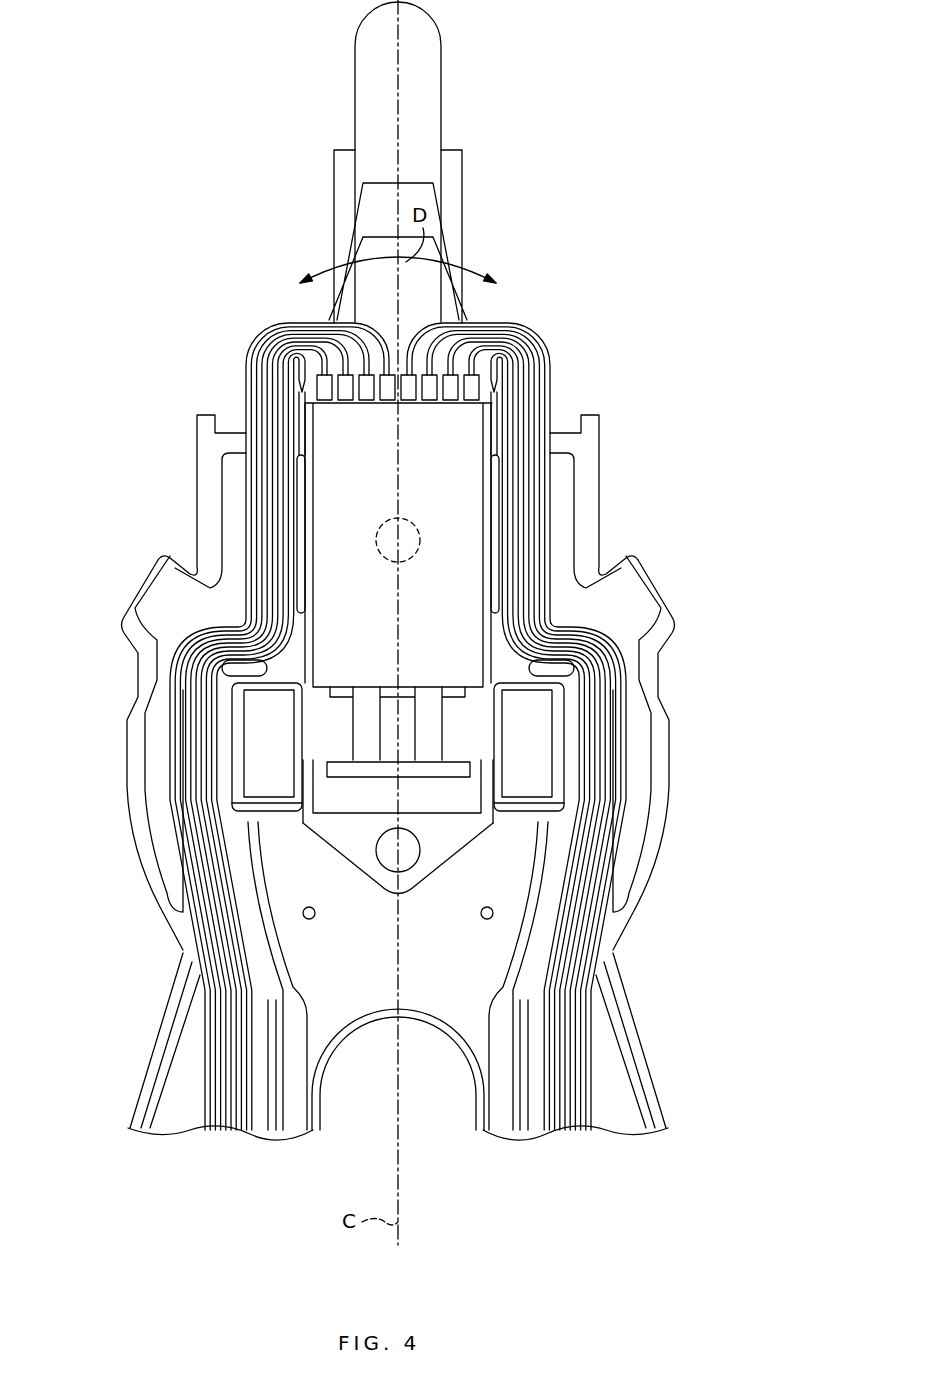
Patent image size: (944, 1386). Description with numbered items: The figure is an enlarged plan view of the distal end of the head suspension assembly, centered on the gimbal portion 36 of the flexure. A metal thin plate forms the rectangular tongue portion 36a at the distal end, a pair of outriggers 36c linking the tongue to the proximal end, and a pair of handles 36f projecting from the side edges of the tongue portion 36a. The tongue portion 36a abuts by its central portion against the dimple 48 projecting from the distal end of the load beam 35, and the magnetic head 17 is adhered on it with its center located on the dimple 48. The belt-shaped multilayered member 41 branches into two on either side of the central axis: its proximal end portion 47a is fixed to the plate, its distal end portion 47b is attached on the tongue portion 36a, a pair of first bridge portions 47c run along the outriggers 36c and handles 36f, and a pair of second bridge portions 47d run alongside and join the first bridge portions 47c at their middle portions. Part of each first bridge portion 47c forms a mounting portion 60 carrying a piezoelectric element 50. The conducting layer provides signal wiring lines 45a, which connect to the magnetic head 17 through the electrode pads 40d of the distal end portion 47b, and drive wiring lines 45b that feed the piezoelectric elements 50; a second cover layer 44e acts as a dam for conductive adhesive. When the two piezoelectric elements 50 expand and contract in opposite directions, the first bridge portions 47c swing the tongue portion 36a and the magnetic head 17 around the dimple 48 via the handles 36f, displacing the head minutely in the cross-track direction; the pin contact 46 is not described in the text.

The pin contact 46 is at (433, 80).
The distal end portion 47b is at (387, 332).
The signal wiring lines 45a is at (547, 393).
The drive wiring lines 45b is at (290, 1127).
The electrode pads 40d is at (367, 402).
The magnetic head 17 is at (370, 495).
The dimple 48 is at (383, 558).
The gimbal portion 36 is at (767, 287).
The tongue portion 36a is at (487, 440).
The outriggers 36c is at (210, 535).
The handles 36f is at (275, 533).
The first bridge portions 47c is at (265, 608).
The second bridge portions 47d is at (615, 688).
The second cover layer 44e is at (235, 684).
The mounting portion 60 is at (233, 727).
The piezoelectric element 50 is at (258, 746).
The multilayered member 41 is at (226, 996).
The proximal end portion 47a is at (235, 1050).
The load beam 35 is at (633, 1077).